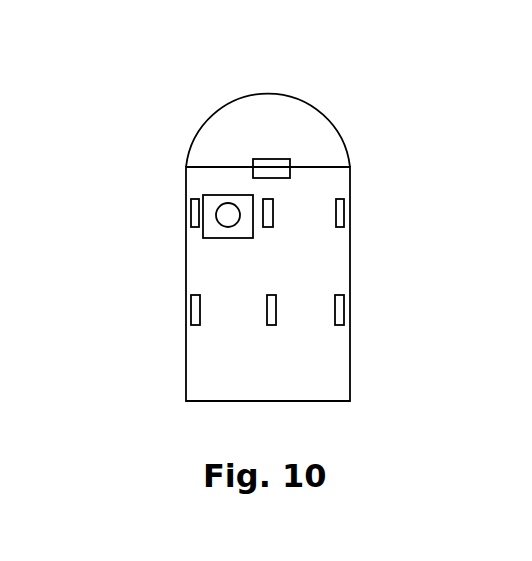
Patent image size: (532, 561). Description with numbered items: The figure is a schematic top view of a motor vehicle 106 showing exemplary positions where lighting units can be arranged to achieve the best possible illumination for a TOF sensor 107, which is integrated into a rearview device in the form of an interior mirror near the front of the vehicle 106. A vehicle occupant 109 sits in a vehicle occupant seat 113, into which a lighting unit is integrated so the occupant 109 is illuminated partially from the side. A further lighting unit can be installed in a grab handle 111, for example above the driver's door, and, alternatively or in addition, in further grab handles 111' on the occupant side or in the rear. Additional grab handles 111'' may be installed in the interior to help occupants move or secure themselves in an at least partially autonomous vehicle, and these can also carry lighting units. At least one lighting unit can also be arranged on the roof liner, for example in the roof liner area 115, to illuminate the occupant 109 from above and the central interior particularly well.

The motor vehicle 106 is at (330, 92).
The TOF sensor 107 is at (255, 158).
The vehicle occupant 109 is at (224, 213).
The grab handle 111 is at (125, 181).
The further grab handles 111' is at (281, 261).
The additional grab handles 111'' is at (399, 367).
The vehicle occupant seat 113 is at (201, 235).
The roof liner area 115 is at (273, 207).